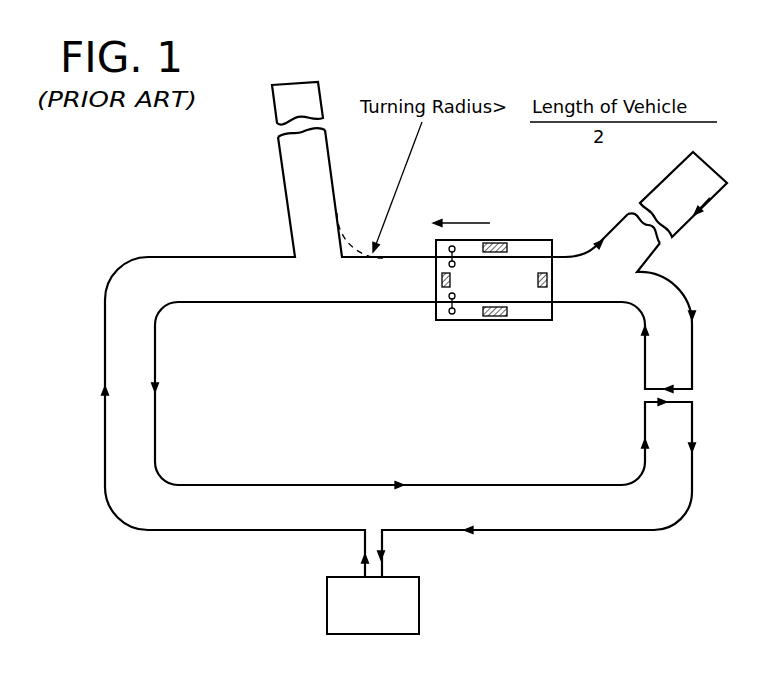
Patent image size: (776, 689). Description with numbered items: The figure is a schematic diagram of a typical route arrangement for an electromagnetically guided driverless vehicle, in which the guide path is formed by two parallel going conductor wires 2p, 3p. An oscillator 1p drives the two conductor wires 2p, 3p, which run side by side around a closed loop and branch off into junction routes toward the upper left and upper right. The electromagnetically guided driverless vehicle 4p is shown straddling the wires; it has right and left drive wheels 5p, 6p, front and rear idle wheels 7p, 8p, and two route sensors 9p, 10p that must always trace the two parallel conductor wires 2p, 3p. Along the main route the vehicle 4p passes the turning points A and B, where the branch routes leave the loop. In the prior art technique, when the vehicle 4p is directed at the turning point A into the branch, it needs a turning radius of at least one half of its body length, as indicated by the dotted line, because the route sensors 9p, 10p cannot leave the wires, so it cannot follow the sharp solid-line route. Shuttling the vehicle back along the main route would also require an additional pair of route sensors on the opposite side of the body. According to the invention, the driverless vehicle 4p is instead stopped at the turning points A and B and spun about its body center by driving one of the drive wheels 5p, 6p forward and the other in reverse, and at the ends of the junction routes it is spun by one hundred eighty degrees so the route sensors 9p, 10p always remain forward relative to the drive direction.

The oscillator 1p is at (422, 607).
The conductor wire 2p is at (490, 532).
The conductor wire 3p is at (463, 483).
The electromagnetically guided driverless vehicle 4p is at (541, 330).
The drive wheel 5p is at (495, 317).
The drive wheel 6p is at (500, 245).
The idle wheel 7p is at (442, 280).
The idle wheel 8p is at (547, 280).
The route sensor 9p is at (455, 313).
The route sensor 10p is at (455, 263).
The turning point A is at (312, 293).
The turning point B is at (603, 293).